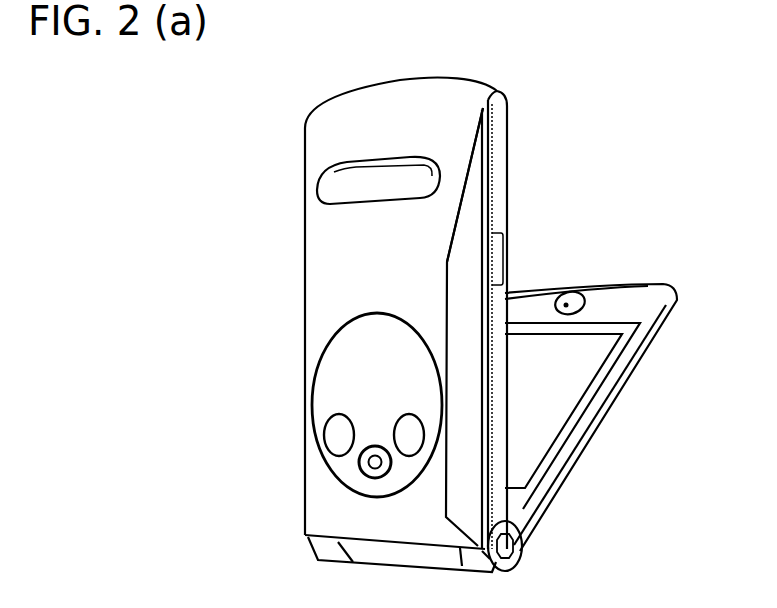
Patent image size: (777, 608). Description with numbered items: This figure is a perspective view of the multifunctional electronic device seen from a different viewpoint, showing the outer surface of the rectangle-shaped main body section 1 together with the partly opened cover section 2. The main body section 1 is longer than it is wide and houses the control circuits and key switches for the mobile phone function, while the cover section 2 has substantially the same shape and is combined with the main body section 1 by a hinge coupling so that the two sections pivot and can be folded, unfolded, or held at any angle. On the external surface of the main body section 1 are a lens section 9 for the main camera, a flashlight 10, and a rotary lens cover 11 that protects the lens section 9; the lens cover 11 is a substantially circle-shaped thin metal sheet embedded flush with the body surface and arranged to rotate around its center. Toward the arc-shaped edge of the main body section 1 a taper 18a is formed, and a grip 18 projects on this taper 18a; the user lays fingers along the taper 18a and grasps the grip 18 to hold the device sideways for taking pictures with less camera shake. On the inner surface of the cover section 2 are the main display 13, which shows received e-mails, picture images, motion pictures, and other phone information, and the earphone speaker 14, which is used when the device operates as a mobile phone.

The main body section 1 is at (490, 133).
The cover section 2 is at (575, 462).
The lens section 9 is at (369, 458).
The flashlight 10 is at (327, 427).
The rotary lens cover 11 is at (327, 340).
The main display 13 is at (548, 390).
The earphone speaker 14 is at (578, 295).
The grip 18 is at (357, 170).
The taper 18a is at (463, 170).